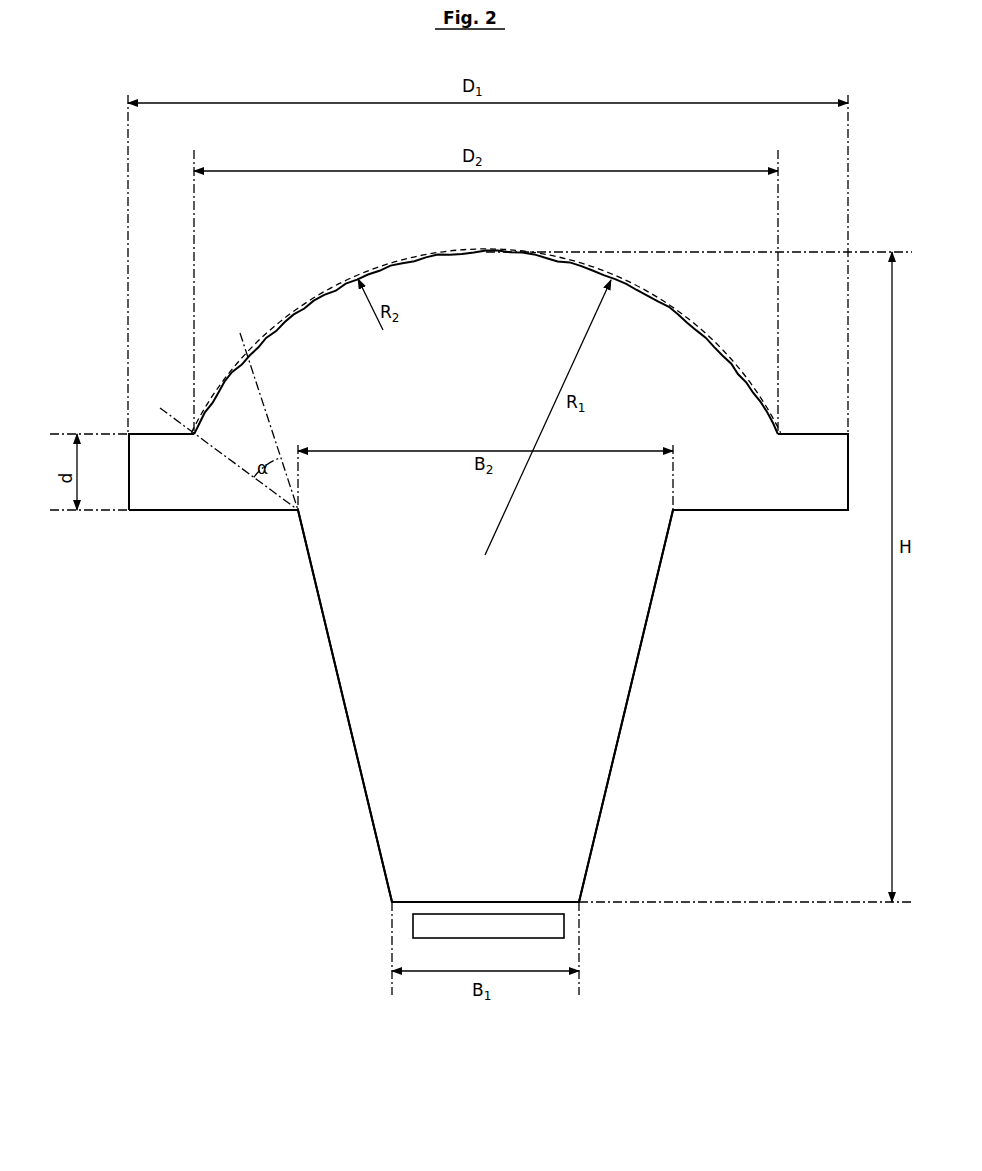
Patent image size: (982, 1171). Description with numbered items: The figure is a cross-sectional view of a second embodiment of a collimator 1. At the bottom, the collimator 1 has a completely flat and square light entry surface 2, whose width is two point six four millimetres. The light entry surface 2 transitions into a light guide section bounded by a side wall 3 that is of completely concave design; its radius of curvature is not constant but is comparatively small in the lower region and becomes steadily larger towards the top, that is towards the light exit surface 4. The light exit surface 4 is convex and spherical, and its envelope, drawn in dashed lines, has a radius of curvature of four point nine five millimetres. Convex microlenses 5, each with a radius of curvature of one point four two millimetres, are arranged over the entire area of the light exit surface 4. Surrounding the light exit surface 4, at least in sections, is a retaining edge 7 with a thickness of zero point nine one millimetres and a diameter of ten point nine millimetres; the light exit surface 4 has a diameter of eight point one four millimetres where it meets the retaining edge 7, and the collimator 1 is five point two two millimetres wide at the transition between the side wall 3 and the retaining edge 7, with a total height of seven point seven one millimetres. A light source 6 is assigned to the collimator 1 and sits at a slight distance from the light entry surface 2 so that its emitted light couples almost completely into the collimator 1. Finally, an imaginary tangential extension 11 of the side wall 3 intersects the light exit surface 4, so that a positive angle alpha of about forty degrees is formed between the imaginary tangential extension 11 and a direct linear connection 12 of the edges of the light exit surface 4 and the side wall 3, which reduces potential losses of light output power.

The collimator 1 is at (158, 350).
The light entry surface 2 is at (565, 898).
The side wall 3 is at (628, 677).
The light exit surface 4 is at (291, 305).
The microlenses 5 is at (540, 260).
The light source 6 is at (542, 928).
The retaining edge 7 is at (758, 502).
The imaginary tangential extension 11 is at (258, 413).
The direct linear connection 12 is at (213, 443).